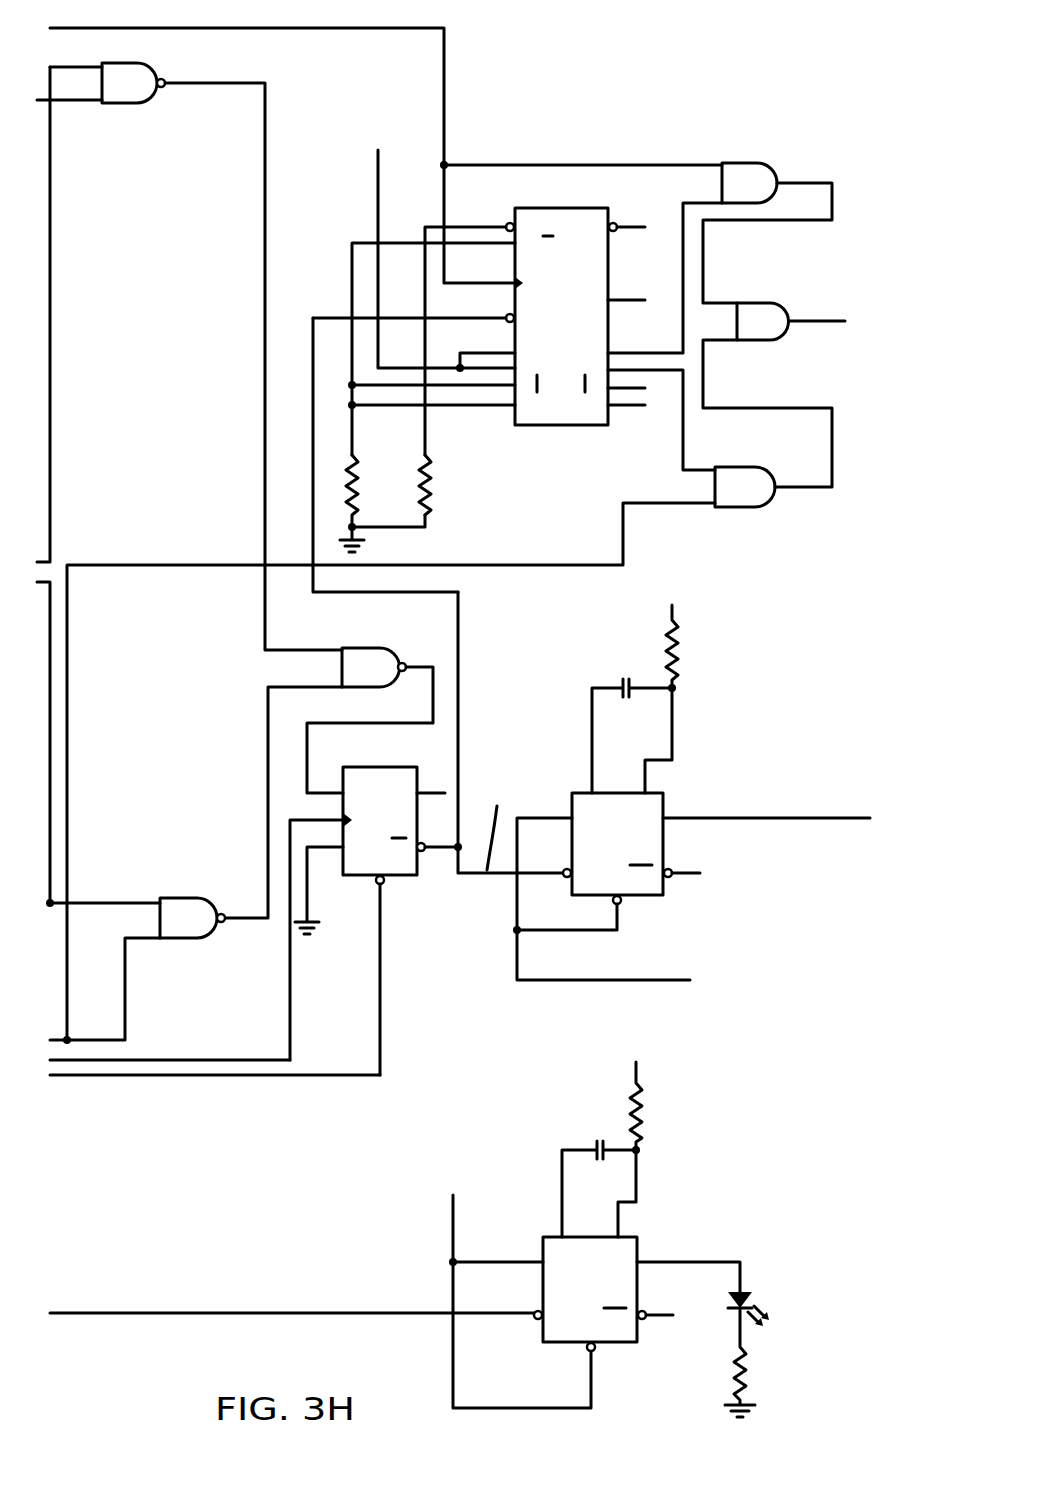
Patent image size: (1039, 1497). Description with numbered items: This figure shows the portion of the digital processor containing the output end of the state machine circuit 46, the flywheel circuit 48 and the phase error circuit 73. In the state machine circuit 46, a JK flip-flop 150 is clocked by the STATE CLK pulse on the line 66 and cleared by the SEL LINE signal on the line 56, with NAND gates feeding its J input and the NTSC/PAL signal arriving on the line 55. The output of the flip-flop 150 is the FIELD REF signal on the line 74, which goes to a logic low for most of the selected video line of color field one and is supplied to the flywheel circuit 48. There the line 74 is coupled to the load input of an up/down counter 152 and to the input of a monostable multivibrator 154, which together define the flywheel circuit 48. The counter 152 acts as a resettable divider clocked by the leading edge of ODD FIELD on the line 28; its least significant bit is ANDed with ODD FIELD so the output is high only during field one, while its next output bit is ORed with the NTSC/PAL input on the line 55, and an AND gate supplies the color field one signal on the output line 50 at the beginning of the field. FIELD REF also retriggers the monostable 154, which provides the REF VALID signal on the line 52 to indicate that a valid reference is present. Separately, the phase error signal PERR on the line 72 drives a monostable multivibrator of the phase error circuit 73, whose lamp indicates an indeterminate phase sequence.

The ODD FIELD line 28 is at (305, 30).
The flywheel circuit 48 is at (650, 145).
The up/down counter 152 is at (600, 213).
The COLOR FIELD 1 output line 50 is at (833, 320).
The FIELD REF line 74 is at (458, 697).
The JK flip-flop 150 is at (405, 865).
The state machine circuit 46 is at (393, 998).
The monostable multivibrator 154 is at (655, 843).
The REF VALID line 52 is at (727, 815).
The NTSC/PAL line 55 is at (93, 1037).
The STATE CLK line 66 is at (98, 1062).
The SEL LINE line 56 is at (168, 1077).
The phase error line 72 is at (182, 1310).
The phase error circuit 73 is at (625, 1355).